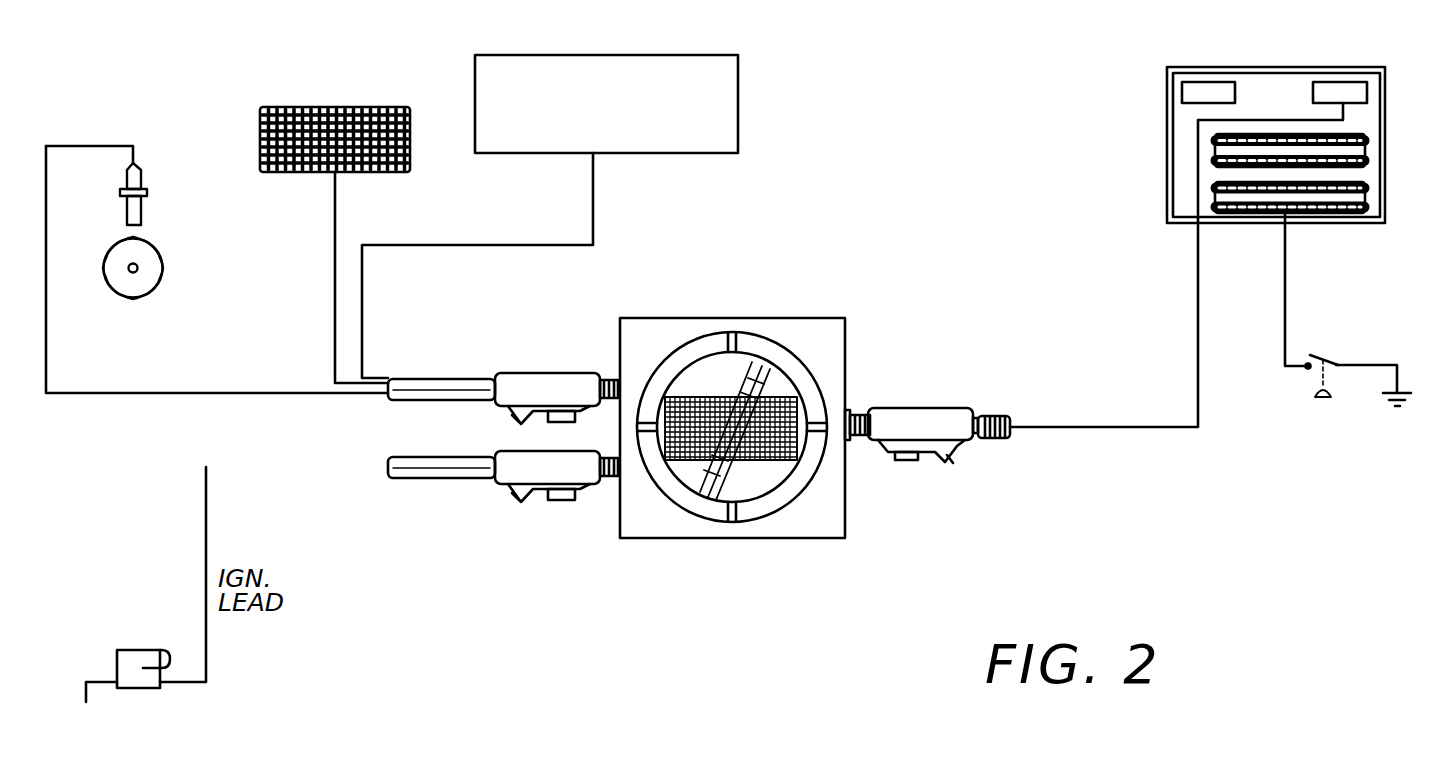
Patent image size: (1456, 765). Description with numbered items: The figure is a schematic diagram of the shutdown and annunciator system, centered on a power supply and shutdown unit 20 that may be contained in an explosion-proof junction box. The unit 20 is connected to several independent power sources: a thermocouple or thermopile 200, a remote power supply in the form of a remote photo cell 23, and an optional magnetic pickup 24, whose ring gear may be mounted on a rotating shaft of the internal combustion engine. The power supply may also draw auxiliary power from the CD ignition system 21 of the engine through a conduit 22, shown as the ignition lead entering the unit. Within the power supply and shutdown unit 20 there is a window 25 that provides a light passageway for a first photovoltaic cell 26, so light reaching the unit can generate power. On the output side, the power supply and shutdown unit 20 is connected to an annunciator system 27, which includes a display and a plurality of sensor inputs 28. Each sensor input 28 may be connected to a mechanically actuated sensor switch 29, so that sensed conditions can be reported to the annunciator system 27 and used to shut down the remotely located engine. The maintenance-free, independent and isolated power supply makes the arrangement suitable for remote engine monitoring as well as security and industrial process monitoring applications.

The power supply and shutdown unit 20 is at (845, 378).
The CD ignition system 21 is at (136, 660).
The conduit 22 is at (440, 389).
The remote photo cell 23 is at (318, 105).
The magnetic pickup 24 is at (164, 262).
The window 25 is at (765, 477).
The first photovoltaic cell 26 is at (760, 392).
The annunciator system 27 is at (1387, 112).
The sensor inputs 28 is at (1365, 152).
The mechanically actuated sensor switch 29 is at (1320, 355).
The thermocouple or thermopile 200 is at (683, 155).